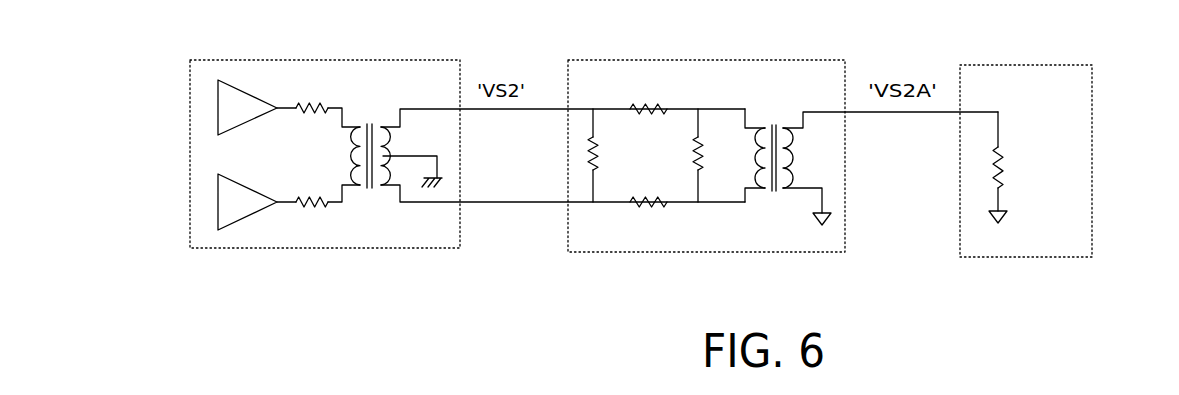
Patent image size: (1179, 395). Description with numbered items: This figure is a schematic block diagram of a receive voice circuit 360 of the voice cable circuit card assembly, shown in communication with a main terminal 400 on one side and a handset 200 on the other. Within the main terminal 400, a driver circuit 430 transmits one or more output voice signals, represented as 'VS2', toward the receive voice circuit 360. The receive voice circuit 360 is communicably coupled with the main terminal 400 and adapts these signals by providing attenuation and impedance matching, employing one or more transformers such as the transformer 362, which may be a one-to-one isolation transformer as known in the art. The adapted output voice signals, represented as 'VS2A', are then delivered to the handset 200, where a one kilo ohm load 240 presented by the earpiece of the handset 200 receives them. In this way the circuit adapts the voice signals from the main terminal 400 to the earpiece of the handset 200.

The handset 200 is at (997, 60).
The load 240 is at (1062, 112).
The receive voice circuit 360 is at (707, 57).
The transformer 362 is at (762, 128).
The main terminal 400 is at (325, 57).
The driver circuit 430 is at (197, 143).